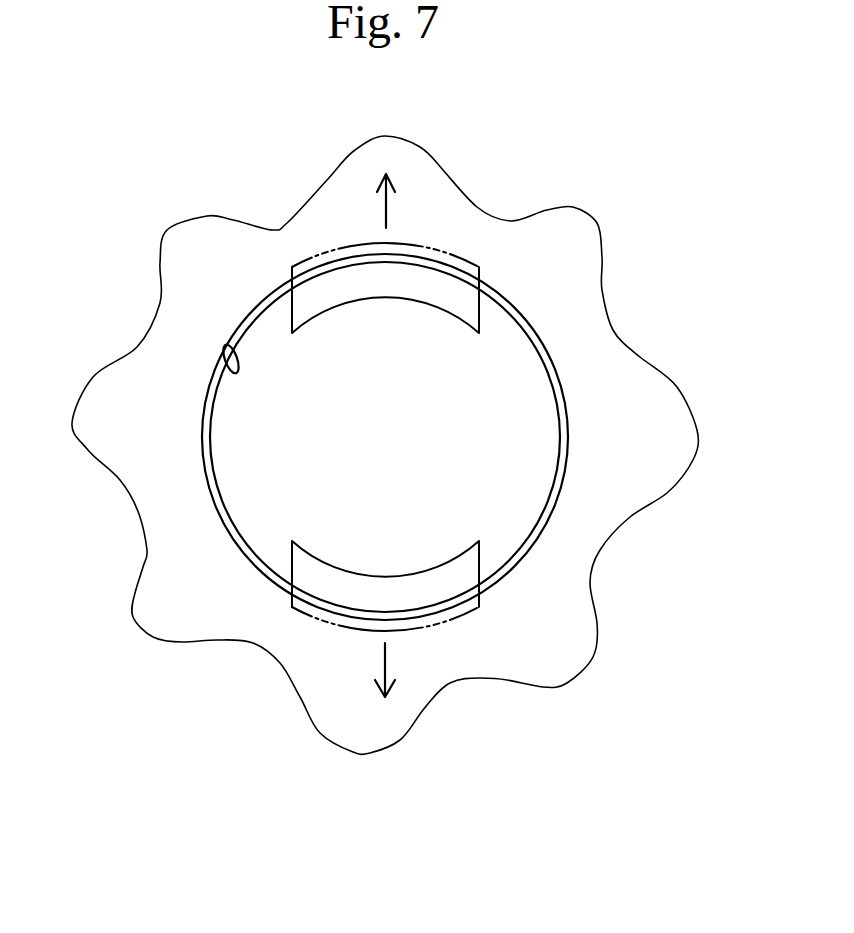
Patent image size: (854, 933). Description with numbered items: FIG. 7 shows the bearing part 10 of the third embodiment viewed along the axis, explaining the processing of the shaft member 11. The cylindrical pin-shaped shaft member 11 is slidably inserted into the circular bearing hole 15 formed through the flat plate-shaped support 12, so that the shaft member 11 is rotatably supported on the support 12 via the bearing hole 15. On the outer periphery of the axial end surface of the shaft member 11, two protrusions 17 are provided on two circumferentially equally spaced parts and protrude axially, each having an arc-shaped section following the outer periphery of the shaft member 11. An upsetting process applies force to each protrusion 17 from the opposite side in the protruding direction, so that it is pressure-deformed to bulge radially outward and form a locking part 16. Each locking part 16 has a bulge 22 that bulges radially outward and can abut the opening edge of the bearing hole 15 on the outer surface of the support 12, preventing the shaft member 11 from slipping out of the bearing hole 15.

The bearing part 10 is at (151, 488).
The shaft member 11 is at (563, 400).
The support 12 is at (215, 603).
The bearing hole 15 is at (227, 367).
The locking part 16 is at (462, 255).
The protrusion 17 is at (477, 323).
The bulge 22 is at (362, 248).